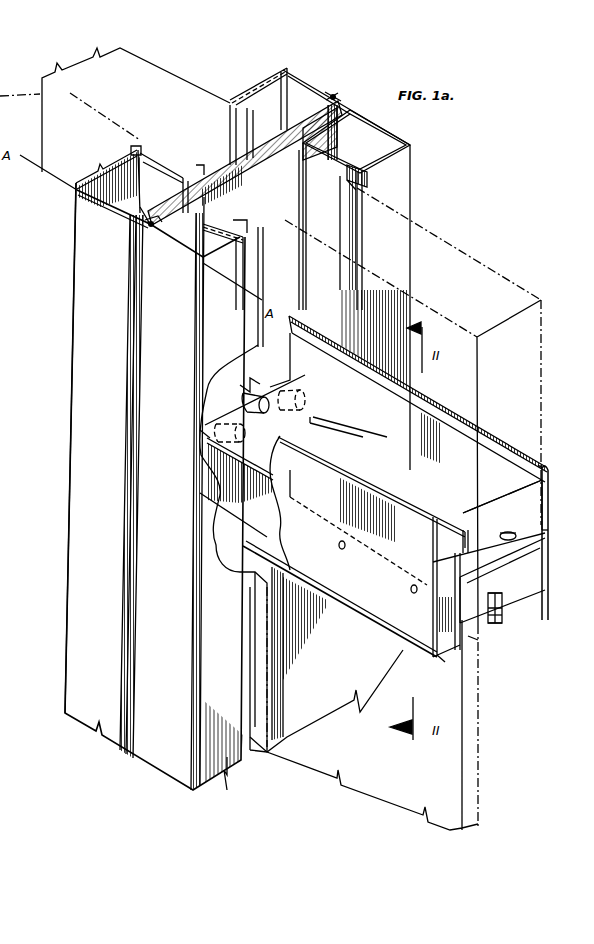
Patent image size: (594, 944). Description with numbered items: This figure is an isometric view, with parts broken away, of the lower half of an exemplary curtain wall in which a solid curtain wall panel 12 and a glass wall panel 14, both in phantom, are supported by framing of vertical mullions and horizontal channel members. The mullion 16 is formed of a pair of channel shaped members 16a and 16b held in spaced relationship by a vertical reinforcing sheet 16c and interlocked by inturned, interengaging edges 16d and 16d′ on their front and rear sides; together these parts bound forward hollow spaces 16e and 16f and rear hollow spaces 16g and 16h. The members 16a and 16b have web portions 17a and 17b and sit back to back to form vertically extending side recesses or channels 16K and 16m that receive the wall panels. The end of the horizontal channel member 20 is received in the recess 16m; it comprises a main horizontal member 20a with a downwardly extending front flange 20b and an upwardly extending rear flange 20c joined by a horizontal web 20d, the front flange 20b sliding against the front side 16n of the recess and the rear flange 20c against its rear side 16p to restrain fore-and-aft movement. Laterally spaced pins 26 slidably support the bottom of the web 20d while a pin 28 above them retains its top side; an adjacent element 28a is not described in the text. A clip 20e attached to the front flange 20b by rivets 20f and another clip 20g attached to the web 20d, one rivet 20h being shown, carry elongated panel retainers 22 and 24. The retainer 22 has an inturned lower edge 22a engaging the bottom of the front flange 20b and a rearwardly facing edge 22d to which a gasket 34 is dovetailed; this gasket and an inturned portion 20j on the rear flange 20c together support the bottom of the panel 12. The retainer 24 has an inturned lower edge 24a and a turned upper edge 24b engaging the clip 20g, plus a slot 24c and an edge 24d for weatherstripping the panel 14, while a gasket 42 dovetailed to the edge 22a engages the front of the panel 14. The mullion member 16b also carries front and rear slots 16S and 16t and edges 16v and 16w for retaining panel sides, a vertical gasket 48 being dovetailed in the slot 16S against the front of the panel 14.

The solid curtain wall panel 12 is at (474, 258).
The glass wall panel 14 is at (482, 728).
The mullion 16 is at (72, 327).
The channel shaped member 16a is at (82, 374).
The channel shaped member 16b is at (126, 461).
The vertical reinforcing sheet 16c is at (201, 172).
The inturned interengaging edge 16d is at (150, 225).
The inturned interengaging edge 16d′ is at (150, 223).
The forward hollow space 16e is at (103, 178).
The forward hollow space 16f is at (185, 238).
The rear hollow space 16g is at (284, 67).
The rear hollow space 16h is at (392, 141).
The side recess or channel 16K is at (166, 150).
The side recess or channel 16m is at (257, 190).
The front side of recess 16n is at (158, 226).
The rear side of recess 16p is at (316, 168).
The front elongated slot 16S is at (256, 240).
The rear elongated slot 16t is at (368, 170).
The front edge 16v is at (269, 228).
The rear edge 16w is at (356, 184).
The web portion 17a is at (187, 172).
The web portion 17b is at (260, 162).
The horizontal channel member 20 is at (553, 477).
The main horizontal member 20a is at (472, 533).
The front flange 20b is at (476, 636).
The rear flange 20c is at (536, 496).
The horizontal web 20d is at (427, 553).
The clip 20e is at (433, 612).
The rivets 20f is at (336, 547).
The clip 20g is at (502, 580).
The rivet 20h is at (547, 528).
The inturned portion 20j is at (523, 458).
The panel retainer 22 is at (250, 536).
The inturned lower edge 22a is at (472, 644).
The rearwardly facing edge 22d is at (453, 510).
The panel retainer 24 is at (517, 623).
The inturned lower edge 24a is at (520, 593).
The turned upper edge 24b is at (516, 536).
The elongated slot 24c is at (492, 614).
The elongated edge 24d is at (488, 625).
The pins 26 is at (205, 434).
The pin 28 is at (243, 400).
The hinge plate 28a is at (249, 391).
The gasket 34 is at (381, 457).
The gasket 42 is at (442, 663).
The elongated vertical gasket 48 is at (270, 662).